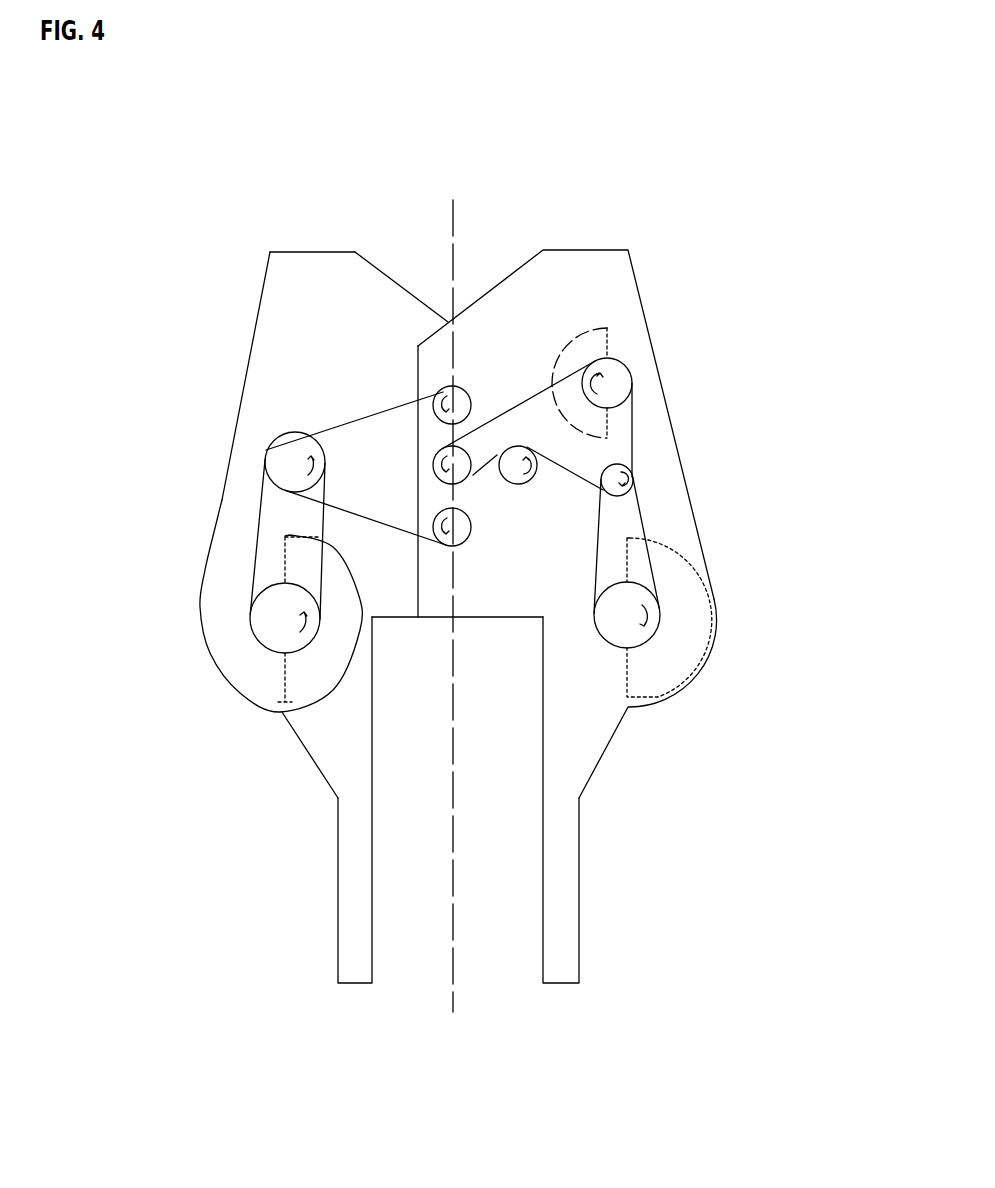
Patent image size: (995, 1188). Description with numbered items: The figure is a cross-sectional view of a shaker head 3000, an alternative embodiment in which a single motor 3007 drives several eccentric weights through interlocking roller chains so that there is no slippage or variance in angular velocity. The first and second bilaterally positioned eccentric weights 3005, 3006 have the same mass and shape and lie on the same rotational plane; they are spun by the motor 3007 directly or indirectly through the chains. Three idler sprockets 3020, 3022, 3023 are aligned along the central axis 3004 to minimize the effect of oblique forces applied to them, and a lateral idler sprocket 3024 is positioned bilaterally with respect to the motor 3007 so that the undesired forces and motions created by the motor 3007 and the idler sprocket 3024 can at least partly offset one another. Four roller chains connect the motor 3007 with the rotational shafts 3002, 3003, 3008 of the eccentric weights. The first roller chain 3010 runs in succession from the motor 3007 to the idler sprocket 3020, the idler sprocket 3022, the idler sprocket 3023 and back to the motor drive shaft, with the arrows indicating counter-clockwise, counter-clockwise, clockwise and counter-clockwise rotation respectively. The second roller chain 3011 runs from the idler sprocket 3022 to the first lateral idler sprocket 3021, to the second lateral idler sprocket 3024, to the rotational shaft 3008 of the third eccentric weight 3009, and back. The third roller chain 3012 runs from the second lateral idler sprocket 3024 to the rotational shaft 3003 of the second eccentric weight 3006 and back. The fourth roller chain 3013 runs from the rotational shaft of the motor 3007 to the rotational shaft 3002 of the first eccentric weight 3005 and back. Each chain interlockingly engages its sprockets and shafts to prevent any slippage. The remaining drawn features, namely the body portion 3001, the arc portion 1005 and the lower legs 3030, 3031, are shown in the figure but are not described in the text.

The shaker head 3000 is at (238, 248).
The first arm body 3001 is at (258, 363).
The rotational shaft of first bilaterally positioned eccentric weight 3002 is at (262, 630).
The rotational shaft of second bilaterally positioned eccentric weight 3003 is at (628, 637).
The central axis 3004 is at (443, 213).
The first bilaterally positioned eccentric weight 3005 is at (246, 778).
The second bilaterally positioned eccentric weight 3006 is at (690, 638).
The motor 3007 is at (277, 458).
The rotational shaft of third eccentric weight 3008 is at (615, 390).
The third eccentric weight 3009 is at (593, 345).
The first roller chain 3010 is at (325, 418).
The second roller chain 3011 is at (512, 407).
The third roller chain 3012 is at (640, 513).
The fourth roller chain 3013 is at (255, 530).
The idler sprocket 3020 is at (440, 387).
The first lateral idler sprocket 3021 is at (517, 483).
The idler sprocket 3022 is at (470, 477).
The idler sprocket 3023 is at (462, 540).
The second lateral idler sprocket 3024 is at (633, 463).
The first arm arc portion 1005 is at (303, 680).
The first leg 3030 is at (352, 915).
The second leg 3031 is at (575, 930).